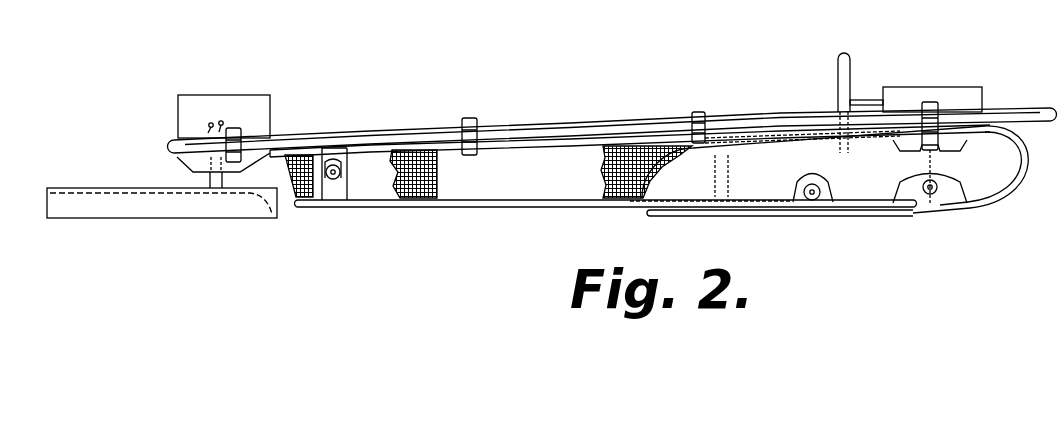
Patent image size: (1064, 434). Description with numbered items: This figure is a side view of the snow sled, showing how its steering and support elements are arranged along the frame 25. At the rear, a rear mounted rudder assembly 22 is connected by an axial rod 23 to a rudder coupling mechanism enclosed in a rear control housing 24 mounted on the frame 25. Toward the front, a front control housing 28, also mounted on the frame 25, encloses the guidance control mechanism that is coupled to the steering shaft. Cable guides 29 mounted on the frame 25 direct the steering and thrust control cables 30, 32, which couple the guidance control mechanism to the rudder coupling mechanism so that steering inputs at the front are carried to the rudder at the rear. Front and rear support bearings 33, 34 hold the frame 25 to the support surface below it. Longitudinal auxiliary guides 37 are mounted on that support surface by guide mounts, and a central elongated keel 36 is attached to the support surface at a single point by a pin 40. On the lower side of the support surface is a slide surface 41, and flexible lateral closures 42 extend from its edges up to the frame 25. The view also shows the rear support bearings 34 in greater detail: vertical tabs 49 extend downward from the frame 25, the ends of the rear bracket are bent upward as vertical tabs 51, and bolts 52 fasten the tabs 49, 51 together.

The rudder assembly 22 is at (123, 233).
The axial rod 23 is at (203, 183).
The rear control housing 24 is at (178, 97).
The frame 25 is at (360, 142).
The front control housing 28 is at (957, 87).
The cable guides 29 is at (707, 112).
The control cable 30 is at (500, 148).
The control cable 32 is at (517, 123).
The front support bearing 33 is at (943, 184).
The rear support bearing 34 is at (357, 166).
The central elongated keel 36 is at (743, 215).
The longitudinal auxiliary guides 37 is at (1000, 153).
The pin 40 is at (810, 203).
The slide surface 41 is at (590, 206).
The flexible lateral closures 42 is at (537, 177).
The vertical tabs 49 is at (322, 160).
The vertical tabs 51 is at (364, 186).
The bolts 52 is at (323, 190).